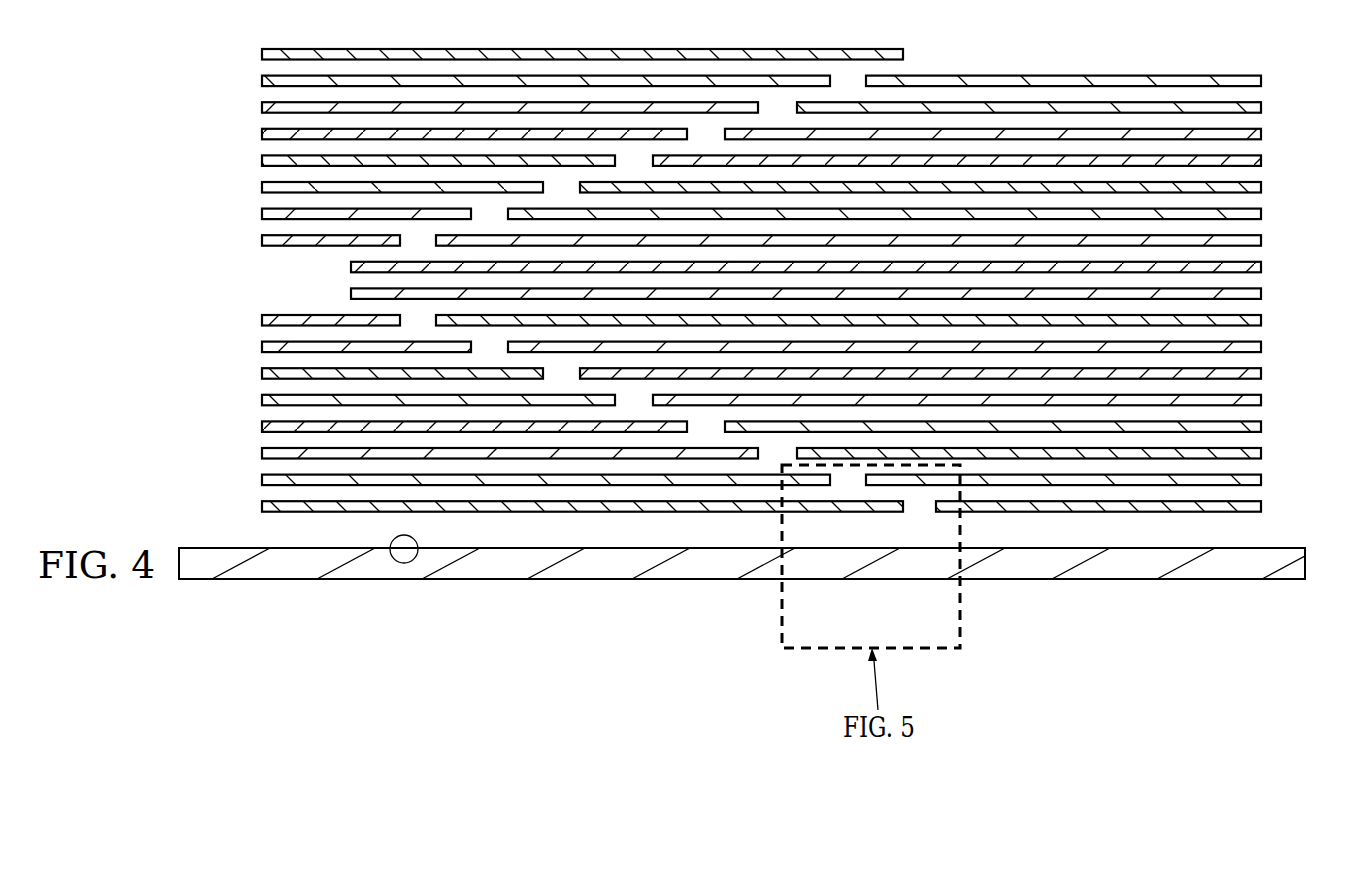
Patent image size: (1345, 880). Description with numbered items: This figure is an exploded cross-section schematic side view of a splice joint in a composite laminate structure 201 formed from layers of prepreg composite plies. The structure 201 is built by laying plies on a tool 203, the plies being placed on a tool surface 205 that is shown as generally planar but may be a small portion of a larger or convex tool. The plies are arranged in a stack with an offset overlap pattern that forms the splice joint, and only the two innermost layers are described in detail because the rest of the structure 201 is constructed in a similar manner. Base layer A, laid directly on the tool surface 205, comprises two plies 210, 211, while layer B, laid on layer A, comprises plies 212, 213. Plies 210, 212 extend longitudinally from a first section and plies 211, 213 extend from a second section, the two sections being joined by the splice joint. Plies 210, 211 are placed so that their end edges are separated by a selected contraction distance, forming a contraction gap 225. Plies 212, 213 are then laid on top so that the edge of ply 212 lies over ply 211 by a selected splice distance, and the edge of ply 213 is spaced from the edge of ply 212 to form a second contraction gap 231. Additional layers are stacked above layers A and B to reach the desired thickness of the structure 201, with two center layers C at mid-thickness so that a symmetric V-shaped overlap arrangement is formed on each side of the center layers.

The composite laminate structure 201 is at (787, 342).
The tool 203 is at (263, 590).
The tool surface 205 is at (398, 562).
The ply 210 is at (1022, 521).
The ply 211 is at (613, 521).
The ply 212 is at (1095, 494).
The ply 213 is at (508, 494).
The contraction gap 225 is at (918, 510).
The contraction gap 231 is at (847, 483).